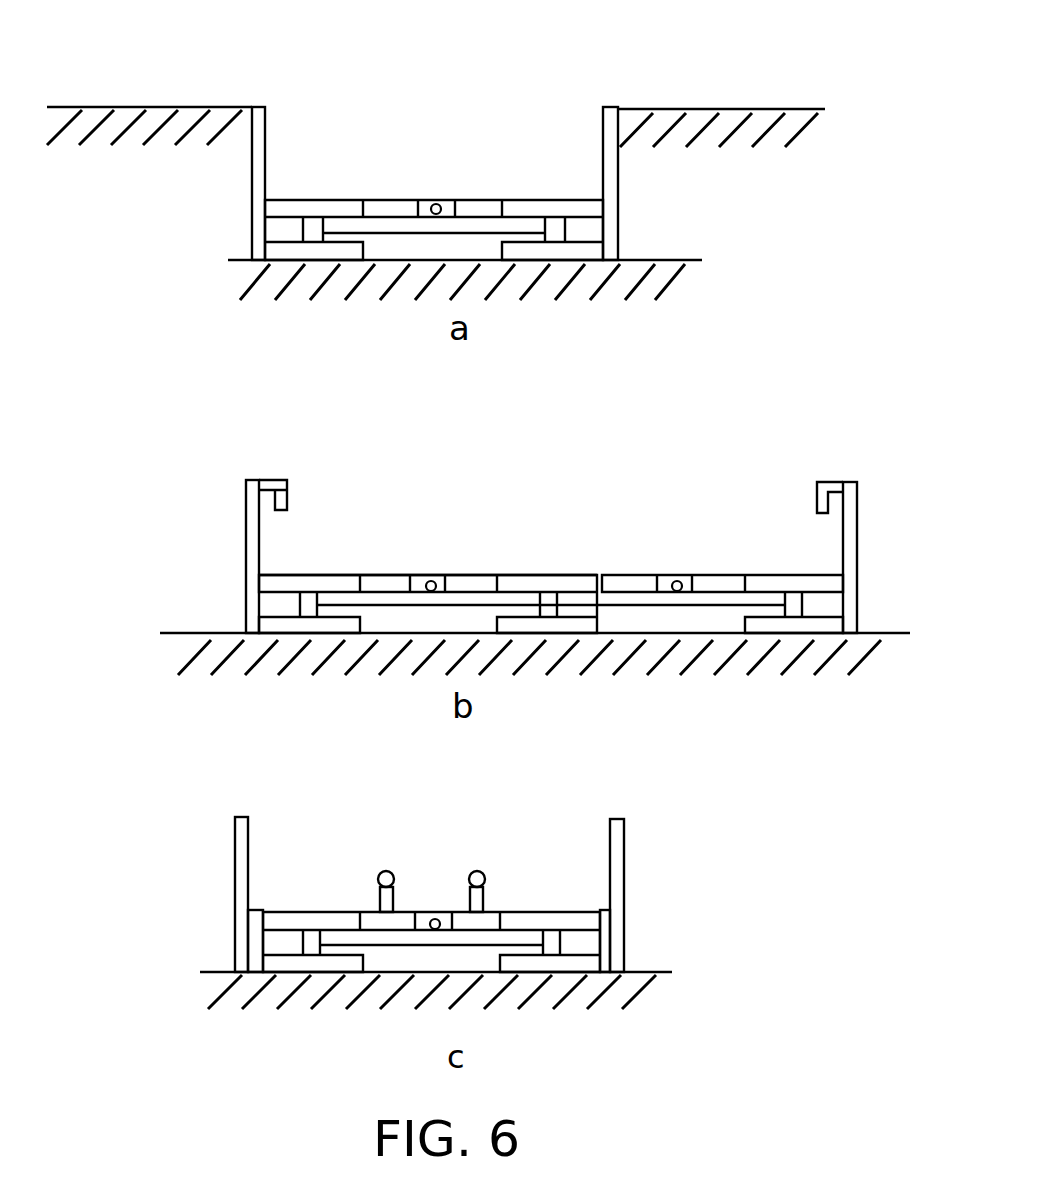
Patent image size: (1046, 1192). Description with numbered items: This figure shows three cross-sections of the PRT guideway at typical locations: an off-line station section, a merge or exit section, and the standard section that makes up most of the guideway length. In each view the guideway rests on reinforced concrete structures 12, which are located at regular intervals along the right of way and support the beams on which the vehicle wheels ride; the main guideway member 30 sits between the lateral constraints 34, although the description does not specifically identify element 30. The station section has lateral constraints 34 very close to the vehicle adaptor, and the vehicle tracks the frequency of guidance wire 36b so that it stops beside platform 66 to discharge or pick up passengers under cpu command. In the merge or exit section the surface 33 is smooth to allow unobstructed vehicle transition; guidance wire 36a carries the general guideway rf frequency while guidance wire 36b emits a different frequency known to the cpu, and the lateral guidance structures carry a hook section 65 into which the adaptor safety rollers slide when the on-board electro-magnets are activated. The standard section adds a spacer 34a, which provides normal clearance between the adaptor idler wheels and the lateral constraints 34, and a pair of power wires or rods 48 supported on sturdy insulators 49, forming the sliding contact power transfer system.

The reinforced concrete structure 12 is at (628, 270).
The pallet unit 30 is at (592, 210).
The surface 33 is at (387, 575).
The lateral constraint 34 is at (250, 170).
The spacer 34a is at (250, 933).
The guidance wire 36a is at (431, 578).
The guidance wire 36b is at (448, 202).
The wires or rods 48 is at (377, 876).
The insulator 49 is at (378, 900).
The hook section 65 is at (270, 485).
The platform 66 is at (678, 109).